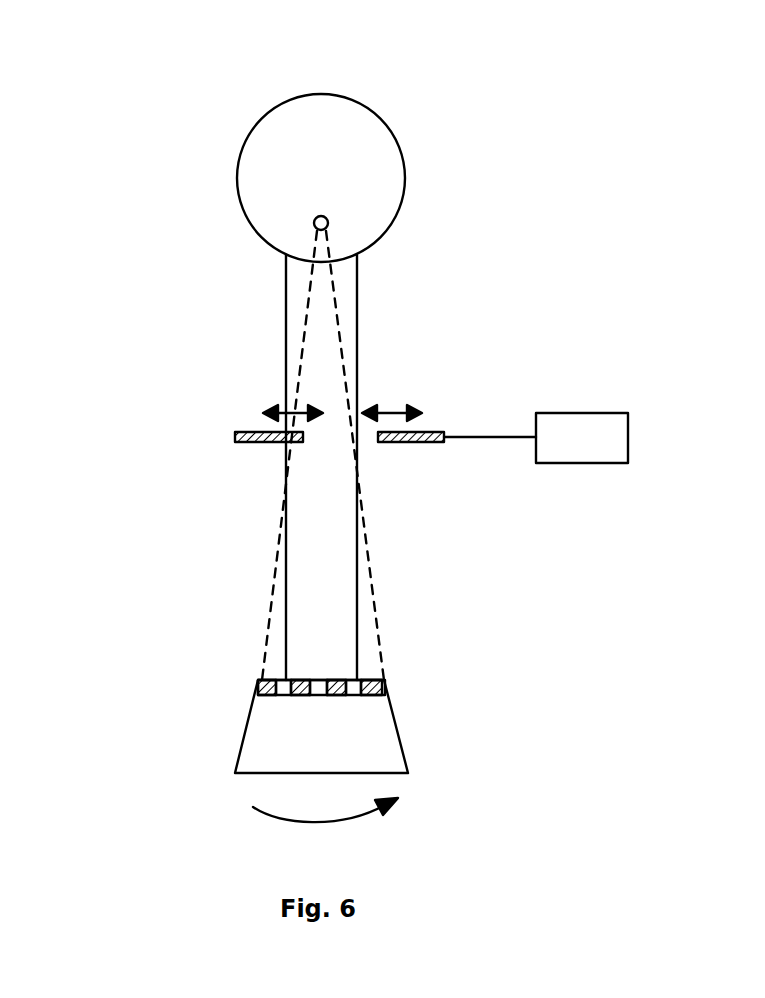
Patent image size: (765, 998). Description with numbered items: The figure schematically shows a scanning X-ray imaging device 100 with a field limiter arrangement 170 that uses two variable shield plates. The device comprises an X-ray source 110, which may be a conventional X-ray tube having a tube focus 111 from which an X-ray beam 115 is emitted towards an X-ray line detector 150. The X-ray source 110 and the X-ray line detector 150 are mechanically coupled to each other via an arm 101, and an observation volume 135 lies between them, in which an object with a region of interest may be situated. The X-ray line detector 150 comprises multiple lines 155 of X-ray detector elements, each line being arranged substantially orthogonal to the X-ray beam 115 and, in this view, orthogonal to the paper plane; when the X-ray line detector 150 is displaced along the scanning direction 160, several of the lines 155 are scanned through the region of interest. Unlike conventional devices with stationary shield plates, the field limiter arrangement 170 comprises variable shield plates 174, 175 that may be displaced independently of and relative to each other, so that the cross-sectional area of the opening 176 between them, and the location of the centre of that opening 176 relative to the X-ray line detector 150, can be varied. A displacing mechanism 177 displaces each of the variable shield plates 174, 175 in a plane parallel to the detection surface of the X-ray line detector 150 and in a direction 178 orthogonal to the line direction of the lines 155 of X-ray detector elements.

The scanning X-ray imaging device 100 is at (178, 140).
The X-ray source 110 is at (378, 110).
The tube focus 111 is at (327, 216).
The arm 101 is at (358, 292).
The X-ray beam 115 is at (305, 303).
The observation volume 135 is at (272, 585).
The field limiter arrangement 170 is at (319, 433).
The variable shield plate 174 is at (250, 445).
The variable shield plate 175 is at (420, 444).
The direction 178 is at (300, 413).
The displacing mechanism 177 is at (565, 425).
The opening 176 is at (333, 457).
The X-ray line detector 150 is at (228, 738).
The lines of X-ray detector elements 155 is at (384, 680).
The scanning direction 160 is at (362, 822).